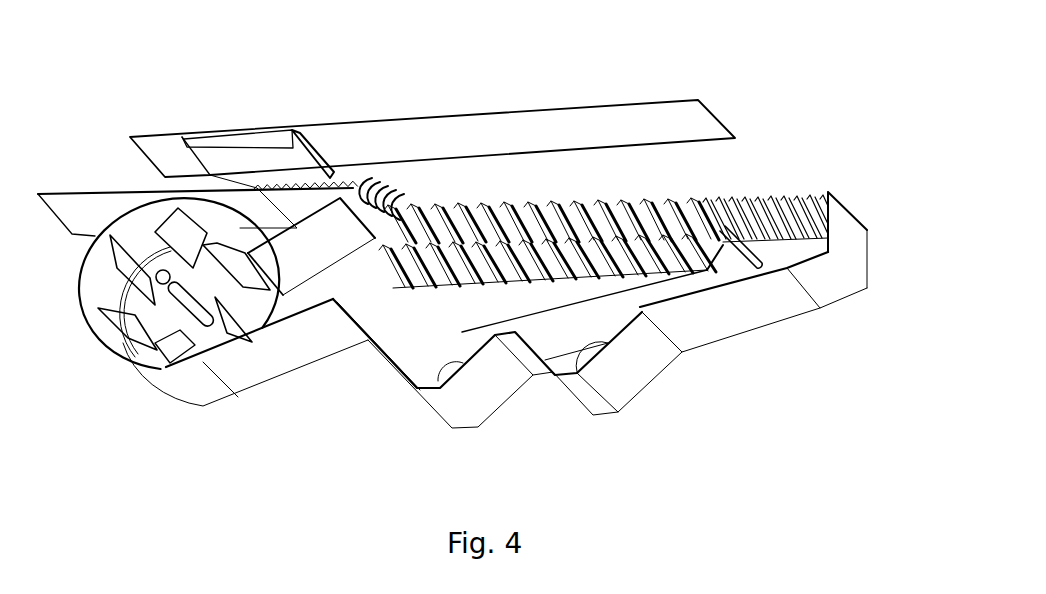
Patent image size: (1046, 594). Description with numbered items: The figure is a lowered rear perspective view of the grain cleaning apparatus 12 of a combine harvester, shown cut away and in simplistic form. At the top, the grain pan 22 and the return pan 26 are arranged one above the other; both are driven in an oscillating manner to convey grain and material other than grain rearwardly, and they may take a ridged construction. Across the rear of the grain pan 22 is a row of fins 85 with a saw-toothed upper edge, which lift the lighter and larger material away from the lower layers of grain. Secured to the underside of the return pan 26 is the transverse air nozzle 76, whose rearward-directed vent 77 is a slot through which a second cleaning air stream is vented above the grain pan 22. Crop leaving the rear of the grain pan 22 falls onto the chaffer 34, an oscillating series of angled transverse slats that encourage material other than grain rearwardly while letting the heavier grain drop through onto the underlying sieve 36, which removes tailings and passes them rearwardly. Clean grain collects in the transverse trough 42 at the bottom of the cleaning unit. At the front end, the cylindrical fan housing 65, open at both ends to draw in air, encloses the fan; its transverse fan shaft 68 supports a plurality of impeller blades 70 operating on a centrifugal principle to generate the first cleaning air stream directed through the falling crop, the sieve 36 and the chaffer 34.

The grain cleaning apparatus 12 is at (131, 52).
The grain pan 22 is at (72, 193).
The return pan 26 is at (432, 107).
The chaffer 34 is at (677, 205).
The sieve 36 is at (448, 273).
The transverse trough 42 is at (497, 393).
The fan housing 65 is at (123, 362).
The fan shaft 68 is at (175, 298).
The impeller blades 70 is at (115, 270).
The transverse air nozzle 76 is at (253, 143).
The rearward-directed vent 77 is at (302, 150).
The fins 85 is at (403, 198).